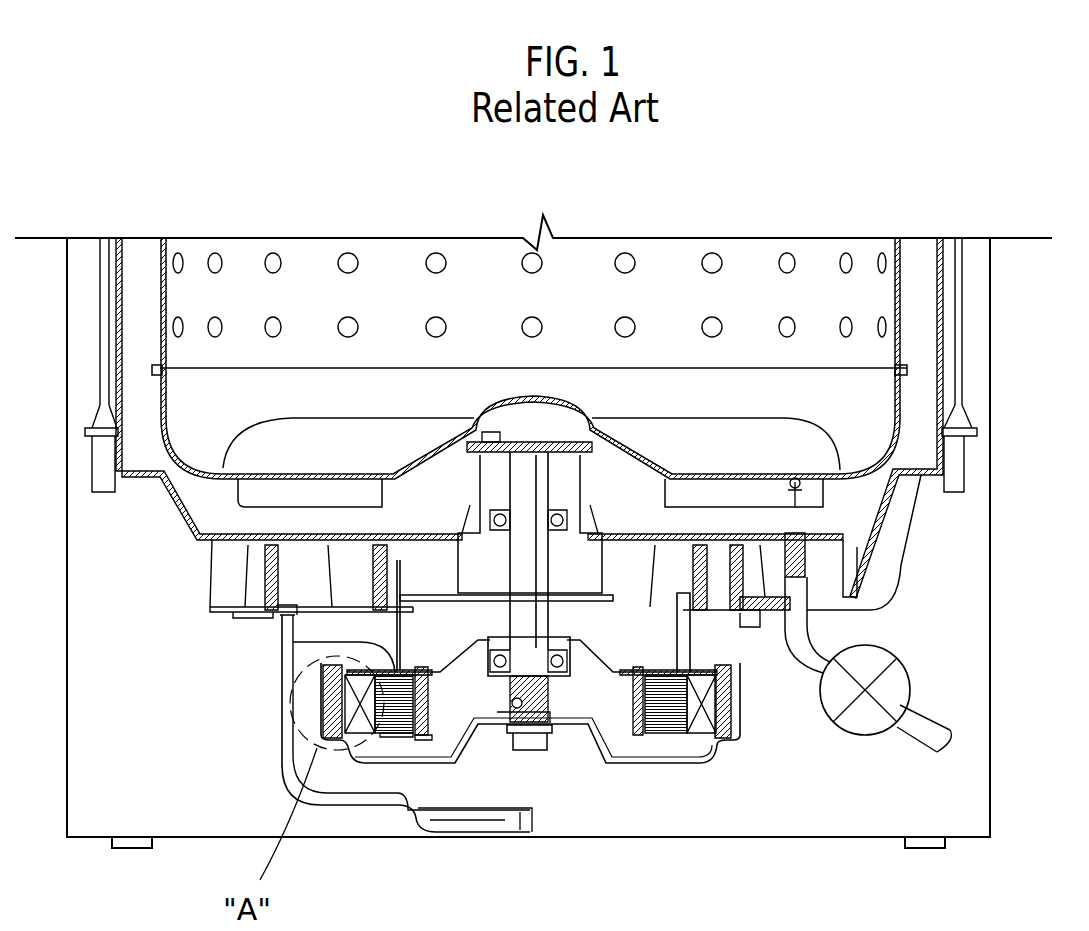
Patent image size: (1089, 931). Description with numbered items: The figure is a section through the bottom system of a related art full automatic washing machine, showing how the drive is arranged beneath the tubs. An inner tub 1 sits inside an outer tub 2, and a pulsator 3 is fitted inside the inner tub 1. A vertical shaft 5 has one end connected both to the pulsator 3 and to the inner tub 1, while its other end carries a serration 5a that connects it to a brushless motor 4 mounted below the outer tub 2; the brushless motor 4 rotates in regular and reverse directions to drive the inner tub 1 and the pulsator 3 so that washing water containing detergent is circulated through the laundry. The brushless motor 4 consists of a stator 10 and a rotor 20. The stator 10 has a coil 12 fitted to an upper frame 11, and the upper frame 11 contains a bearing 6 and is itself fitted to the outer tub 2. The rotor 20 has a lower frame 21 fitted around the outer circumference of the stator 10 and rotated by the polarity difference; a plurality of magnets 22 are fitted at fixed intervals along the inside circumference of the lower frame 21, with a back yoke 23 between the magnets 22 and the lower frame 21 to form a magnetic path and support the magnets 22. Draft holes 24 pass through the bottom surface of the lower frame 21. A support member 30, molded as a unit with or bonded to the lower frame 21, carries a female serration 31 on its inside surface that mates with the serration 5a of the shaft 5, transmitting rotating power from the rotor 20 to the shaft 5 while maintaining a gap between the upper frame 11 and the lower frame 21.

The inner tub 1 is at (898, 282).
The outer tub 2 is at (940, 296).
The pulsator 3 is at (295, 440).
The brushless motor 4 is at (745, 765).
The shaft 5 is at (527, 575).
The serration 5a is at (535, 727).
The bearing 6 is at (565, 654).
The stator 10 is at (597, 636).
The upper frame 11 is at (294, 645).
The coil 12 is at (388, 729).
The rotor 20 is at (628, 768).
The lower frame 21 is at (433, 765).
The magnets 22 is at (722, 742).
The back yoke 23 is at (737, 705).
The draft holes 24 is at (405, 736).
The support member 30 is at (563, 715).
The female serration 31 is at (516, 709).